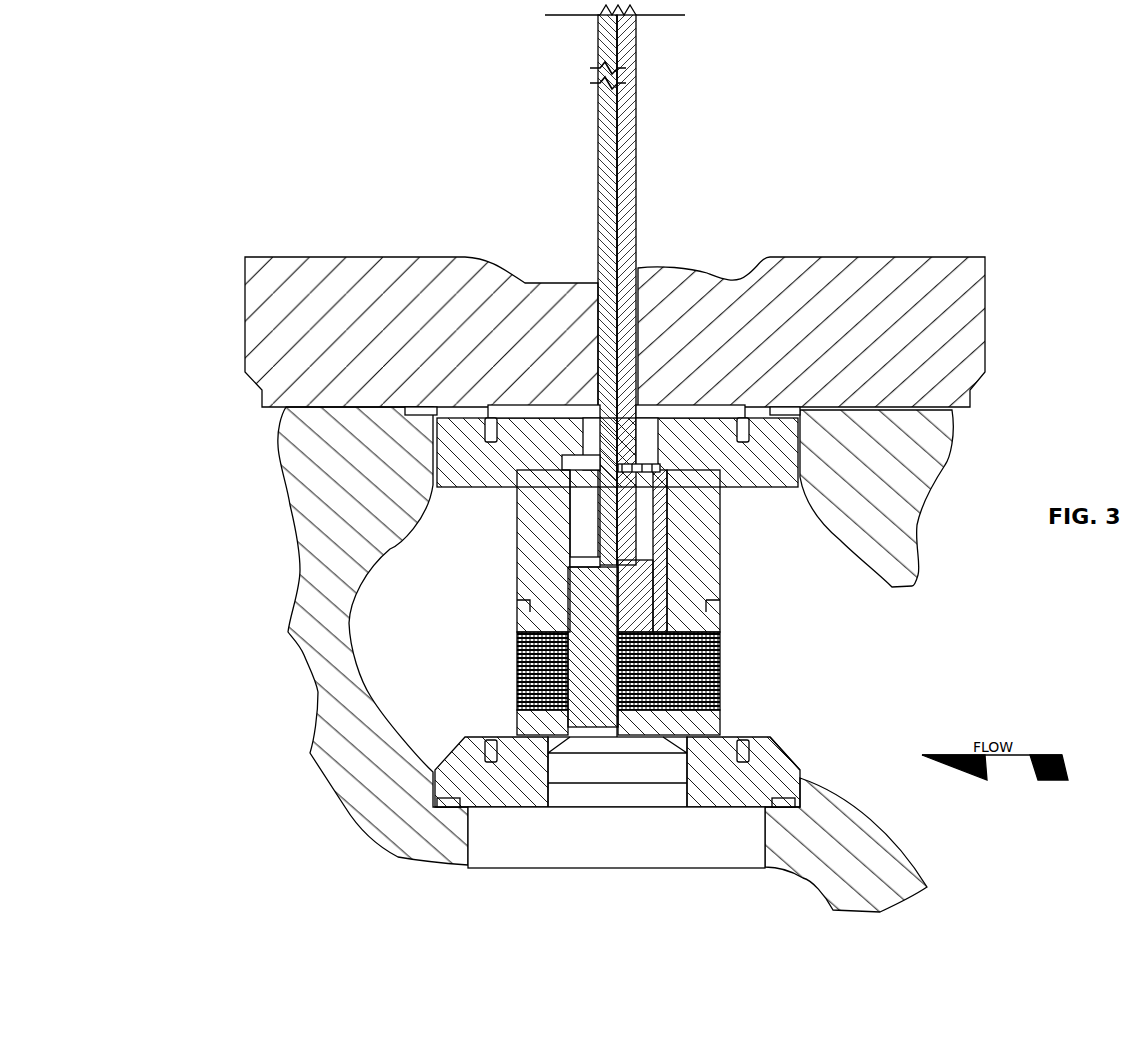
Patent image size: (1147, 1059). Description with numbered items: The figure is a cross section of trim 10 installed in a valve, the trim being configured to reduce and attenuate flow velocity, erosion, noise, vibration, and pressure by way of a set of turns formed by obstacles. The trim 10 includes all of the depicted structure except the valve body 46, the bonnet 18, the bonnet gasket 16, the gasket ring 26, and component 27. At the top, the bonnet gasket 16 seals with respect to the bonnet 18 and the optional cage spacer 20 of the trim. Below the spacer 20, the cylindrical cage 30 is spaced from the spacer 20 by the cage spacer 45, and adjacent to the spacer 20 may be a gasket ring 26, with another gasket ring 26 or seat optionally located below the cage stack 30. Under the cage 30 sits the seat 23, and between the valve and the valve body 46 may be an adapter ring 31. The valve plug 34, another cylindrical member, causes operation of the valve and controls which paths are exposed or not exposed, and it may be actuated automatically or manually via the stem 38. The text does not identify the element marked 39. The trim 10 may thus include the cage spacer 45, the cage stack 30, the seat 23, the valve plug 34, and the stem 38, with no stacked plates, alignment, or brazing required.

The trim 10 is at (810, 742).
The bonnet gasket 16 is at (413, 407).
The bonnet 18 is at (521, 283).
The cage spacer 20 is at (760, 487).
The seat 23 is at (720, 733).
The gasket ring 26 is at (739, 418).
The component 27 is at (789, 418).
The cylindrical cage 30 is at (720, 664).
The adapter ring 31 is at (766, 748).
The valve plug 34 is at (588, 807).
The stem 38 is at (600, 513).
The retaining ring 39 is at (652, 473).
The cage spacer 45 is at (720, 598).
The valve body 46 is at (310, 697).